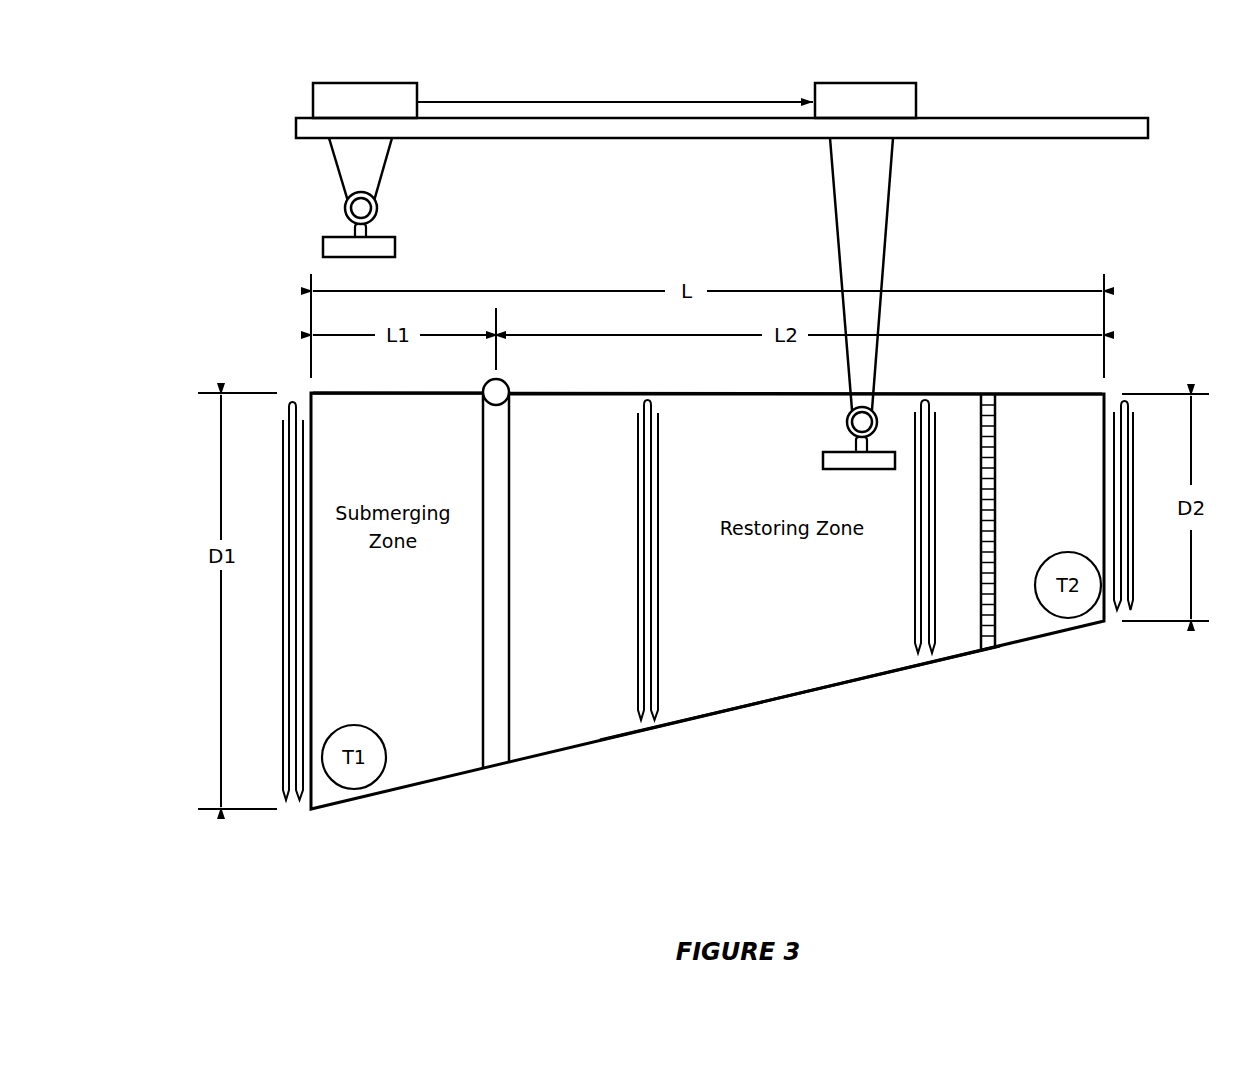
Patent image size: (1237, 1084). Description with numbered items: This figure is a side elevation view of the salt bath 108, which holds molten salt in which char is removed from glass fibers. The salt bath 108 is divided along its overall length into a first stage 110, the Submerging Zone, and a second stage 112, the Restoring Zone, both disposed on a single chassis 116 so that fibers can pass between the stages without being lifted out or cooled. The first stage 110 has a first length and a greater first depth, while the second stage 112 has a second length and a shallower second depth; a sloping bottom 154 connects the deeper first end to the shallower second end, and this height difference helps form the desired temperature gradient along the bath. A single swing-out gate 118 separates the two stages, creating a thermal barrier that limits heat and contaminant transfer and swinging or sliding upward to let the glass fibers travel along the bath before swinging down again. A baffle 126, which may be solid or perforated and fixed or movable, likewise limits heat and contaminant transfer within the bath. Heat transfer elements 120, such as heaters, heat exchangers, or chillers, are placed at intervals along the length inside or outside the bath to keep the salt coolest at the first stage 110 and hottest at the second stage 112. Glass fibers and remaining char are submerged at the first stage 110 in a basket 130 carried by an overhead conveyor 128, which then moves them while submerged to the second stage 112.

The salt bath 108 is at (218, 334).
The first stage 110 is at (397, 393).
The second stage 112 is at (752, 393).
The chassis 116 is at (790, 706).
The gate 118 is at (509, 717).
The heat transfer element 120 is at (286, 800).
The baffle 126 is at (985, 628).
The overhead conveyor 128 is at (376, 83).
The basket 130 is at (383, 235).
The sloping bottom 154 is at (800, 692).